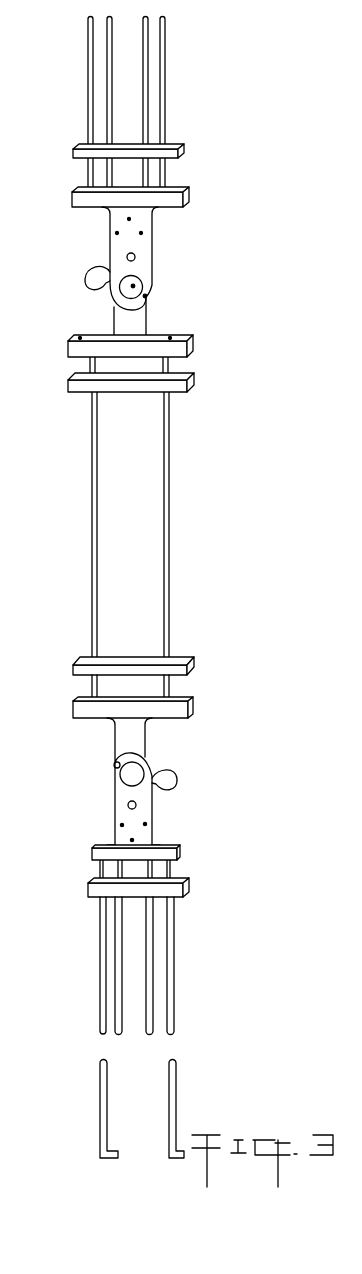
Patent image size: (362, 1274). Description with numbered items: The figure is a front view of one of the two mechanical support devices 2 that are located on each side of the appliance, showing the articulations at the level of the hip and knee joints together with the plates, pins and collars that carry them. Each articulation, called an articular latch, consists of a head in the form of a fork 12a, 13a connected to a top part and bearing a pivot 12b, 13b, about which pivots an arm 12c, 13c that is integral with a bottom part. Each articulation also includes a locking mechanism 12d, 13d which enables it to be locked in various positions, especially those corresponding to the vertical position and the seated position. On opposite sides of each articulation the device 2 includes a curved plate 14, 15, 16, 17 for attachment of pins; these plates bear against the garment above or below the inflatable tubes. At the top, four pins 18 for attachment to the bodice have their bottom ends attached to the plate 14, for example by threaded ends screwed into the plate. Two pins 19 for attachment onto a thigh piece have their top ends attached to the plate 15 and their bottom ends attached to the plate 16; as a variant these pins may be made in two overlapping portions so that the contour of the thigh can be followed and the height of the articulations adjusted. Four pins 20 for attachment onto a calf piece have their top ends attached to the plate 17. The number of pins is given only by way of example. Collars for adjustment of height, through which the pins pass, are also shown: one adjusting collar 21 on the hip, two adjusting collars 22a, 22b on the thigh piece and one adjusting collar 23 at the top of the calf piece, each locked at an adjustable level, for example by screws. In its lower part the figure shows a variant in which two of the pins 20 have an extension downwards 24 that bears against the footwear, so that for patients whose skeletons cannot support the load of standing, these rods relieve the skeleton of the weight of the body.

The mechanical device 2 is at (82, 538).
The fork head 12a is at (110, 228).
The pivot 12b is at (134, 287).
The arm 12c is at (114, 318).
The locking mechanism 12d is at (85, 278).
The fork head 13a is at (125, 738).
The pivot 13b is at (118, 779).
The arm 13c is at (118, 815).
The locking mechanism 13d is at (177, 781).
The curved plate 14 is at (72, 200).
The curved plate 15 is at (188, 349).
The curved plate 16 is at (74, 711).
The curved plate 17 is at (92, 858).
The pins 18 is at (88, 80).
The pins 19 is at (90, 455).
The pins 20 is at (100, 960).
The adjusting collar 21 is at (78, 147).
The adjusting collar 22a is at (188, 378).
The adjusting collar 22b is at (185, 665).
The adjusting collar 23 is at (188, 889).
The downward extension 24 is at (100, 1100).